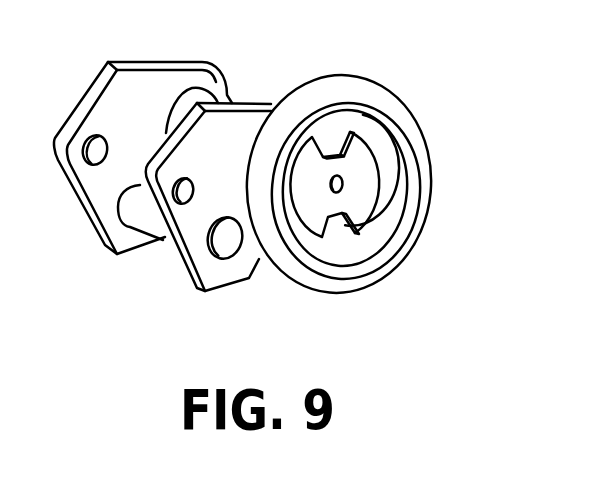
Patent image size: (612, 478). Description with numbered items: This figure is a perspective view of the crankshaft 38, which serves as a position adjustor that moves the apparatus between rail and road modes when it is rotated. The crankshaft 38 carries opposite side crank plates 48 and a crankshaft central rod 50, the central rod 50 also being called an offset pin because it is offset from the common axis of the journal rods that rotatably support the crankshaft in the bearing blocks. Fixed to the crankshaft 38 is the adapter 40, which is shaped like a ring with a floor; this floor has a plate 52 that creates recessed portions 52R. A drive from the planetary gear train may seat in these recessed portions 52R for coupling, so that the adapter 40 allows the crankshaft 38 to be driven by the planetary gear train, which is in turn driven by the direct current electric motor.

The crankshaft 38 is at (382, 46).
The adapter 40 is at (407, 110).
The crank plates 48 is at (103, 245).
The crankshaft central rod 50 is at (150, 228).
The plate 52 is at (350, 228).
The recessed portions 52R is at (333, 137).